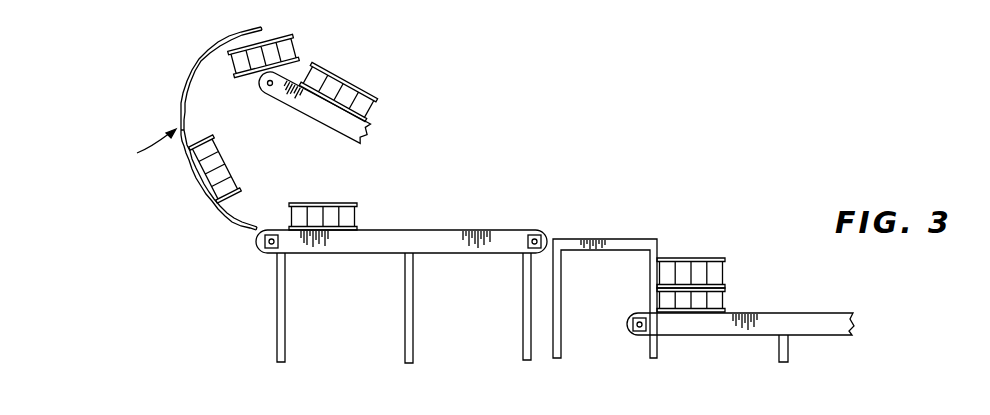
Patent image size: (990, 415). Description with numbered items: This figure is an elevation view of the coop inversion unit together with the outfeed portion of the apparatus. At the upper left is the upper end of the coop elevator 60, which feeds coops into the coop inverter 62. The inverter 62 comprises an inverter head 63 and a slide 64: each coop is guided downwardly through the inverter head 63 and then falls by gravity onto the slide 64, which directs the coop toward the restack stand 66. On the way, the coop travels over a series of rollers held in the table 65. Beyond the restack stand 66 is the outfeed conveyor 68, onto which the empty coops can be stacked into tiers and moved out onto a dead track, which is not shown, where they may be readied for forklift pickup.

The coop elevator 60 is at (373, 123).
The coop inverter 62 is at (144, 147).
The inverter head 63 is at (205, 64).
The slide 64 is at (206, 193).
The table 65 is at (412, 229).
The restack stand 66 is at (591, 238).
The outfeed conveyor 68 is at (774, 311).